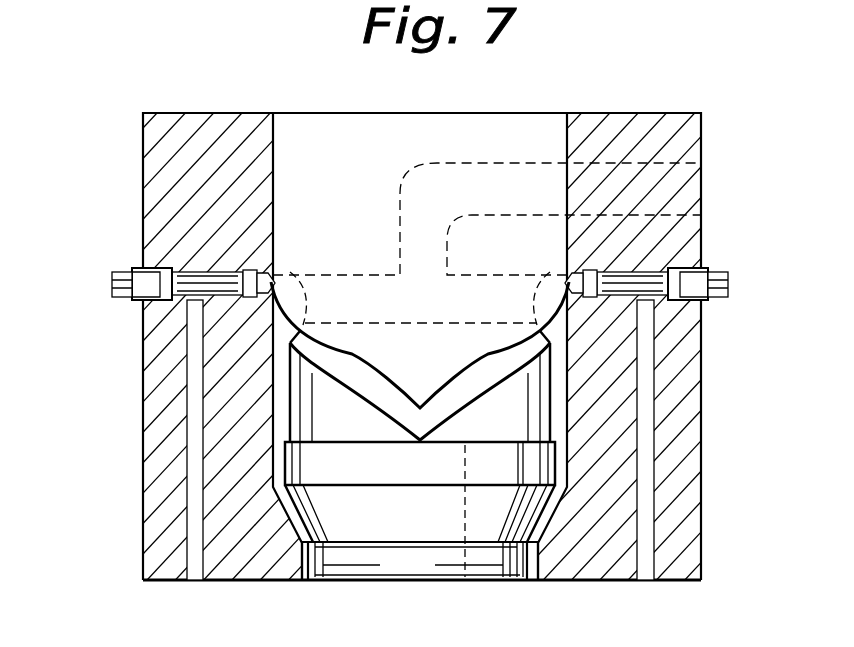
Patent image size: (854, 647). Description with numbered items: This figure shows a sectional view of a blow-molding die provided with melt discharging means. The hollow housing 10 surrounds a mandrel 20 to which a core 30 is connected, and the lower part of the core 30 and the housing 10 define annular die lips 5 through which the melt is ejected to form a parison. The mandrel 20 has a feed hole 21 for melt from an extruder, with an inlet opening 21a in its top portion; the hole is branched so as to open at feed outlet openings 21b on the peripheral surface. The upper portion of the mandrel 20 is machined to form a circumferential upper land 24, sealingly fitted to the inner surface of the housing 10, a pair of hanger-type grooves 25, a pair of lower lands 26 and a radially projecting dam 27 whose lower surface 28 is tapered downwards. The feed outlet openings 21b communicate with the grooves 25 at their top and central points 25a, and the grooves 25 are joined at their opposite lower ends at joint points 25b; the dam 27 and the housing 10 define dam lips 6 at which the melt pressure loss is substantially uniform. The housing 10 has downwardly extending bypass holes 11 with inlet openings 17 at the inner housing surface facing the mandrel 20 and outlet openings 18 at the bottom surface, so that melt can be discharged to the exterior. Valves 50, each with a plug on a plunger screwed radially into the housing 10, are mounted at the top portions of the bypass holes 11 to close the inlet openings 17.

The die lips 5 is at (302, 586).
The dam lips 6 is at (557, 470).
The housing 10 is at (152, 154).
The first pair of bypass holes 11 is at (197, 398).
The inlet openings 17 is at (283, 280).
The outlet openings 18 is at (190, 583).
The mandrel 20 is at (511, 128).
The feed hole 21 is at (413, 190).
The inlet opening 21a is at (701, 186).
The feed outlet openings 21b is at (307, 305).
The upper land 24 is at (404, 364).
The grooves 25 is at (358, 373).
The top and central points 25a is at (282, 302).
The joint points 25b is at (423, 443).
The lower lands 26 is at (323, 434).
The dam 27 is at (400, 478).
The lower surface 28 is at (400, 529).
The core 30 is at (384, 570).
The valves 50 is at (143, 266).